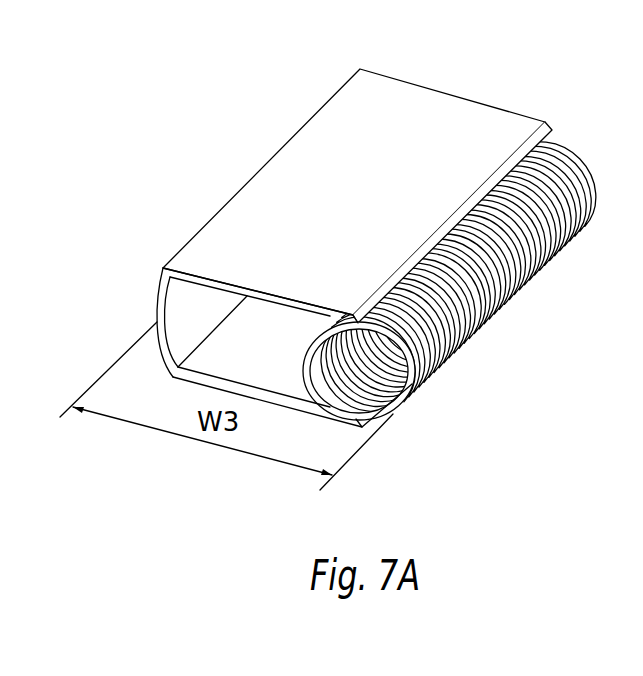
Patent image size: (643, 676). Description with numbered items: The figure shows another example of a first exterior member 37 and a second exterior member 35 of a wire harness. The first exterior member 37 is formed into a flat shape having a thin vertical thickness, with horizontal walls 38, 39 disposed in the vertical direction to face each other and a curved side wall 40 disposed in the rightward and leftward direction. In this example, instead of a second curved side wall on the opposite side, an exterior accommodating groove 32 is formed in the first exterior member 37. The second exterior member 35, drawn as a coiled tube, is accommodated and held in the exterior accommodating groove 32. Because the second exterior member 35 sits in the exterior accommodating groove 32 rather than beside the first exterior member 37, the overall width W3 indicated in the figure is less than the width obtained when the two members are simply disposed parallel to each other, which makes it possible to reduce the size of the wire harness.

The exterior accommodating groove 32 is at (320, 366).
The second exterior member 35 is at (575, 141).
The first exterior member 37 is at (303, 156).
The horizontal wall 38 is at (297, 305).
The horizontal wall 39 is at (279, 404).
The curved side wall 40 is at (160, 296).